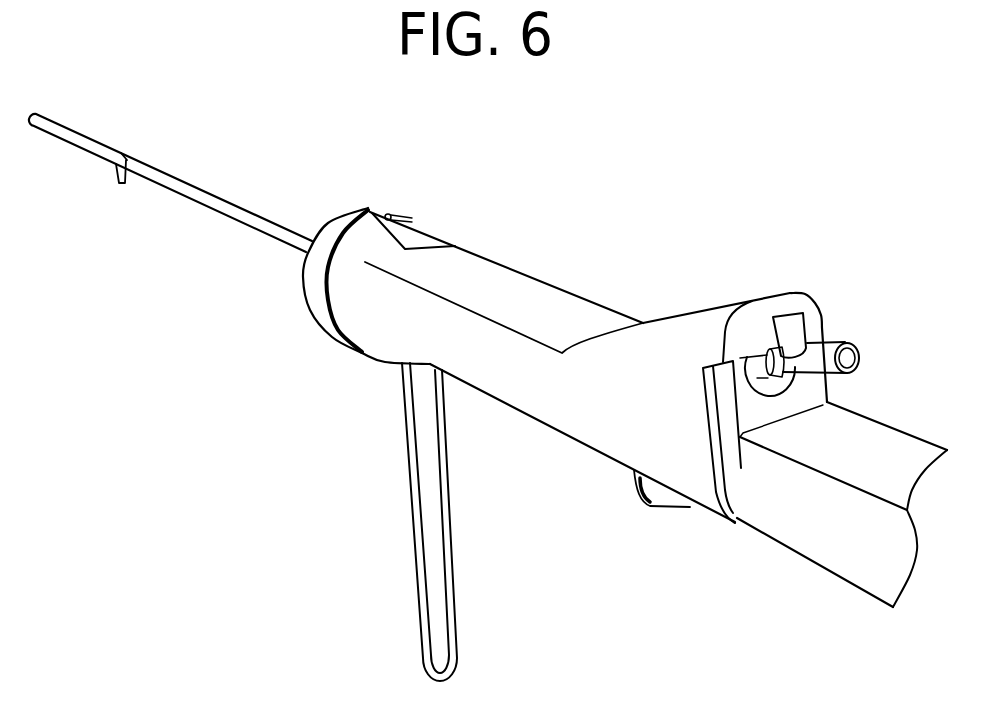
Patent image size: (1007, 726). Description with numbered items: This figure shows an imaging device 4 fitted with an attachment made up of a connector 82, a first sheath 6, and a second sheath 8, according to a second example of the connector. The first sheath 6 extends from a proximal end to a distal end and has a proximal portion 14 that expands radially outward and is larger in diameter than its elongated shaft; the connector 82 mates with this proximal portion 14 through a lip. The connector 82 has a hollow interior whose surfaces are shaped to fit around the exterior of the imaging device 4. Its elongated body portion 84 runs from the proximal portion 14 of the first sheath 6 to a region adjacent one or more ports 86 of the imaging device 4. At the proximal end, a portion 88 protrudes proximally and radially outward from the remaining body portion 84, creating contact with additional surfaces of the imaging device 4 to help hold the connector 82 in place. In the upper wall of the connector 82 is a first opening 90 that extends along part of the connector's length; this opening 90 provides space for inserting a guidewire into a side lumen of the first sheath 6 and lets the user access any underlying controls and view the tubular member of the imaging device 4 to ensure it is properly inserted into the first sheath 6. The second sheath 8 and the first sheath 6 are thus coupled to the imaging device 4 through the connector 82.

The imaging device 4 is at (850, 543).
The first sheath 6 is at (230, 205).
The second sheath 8 is at (82, 134).
The proximal portion 14 is at (317, 288).
The connector 82 is at (535, 306).
The elongated body portion 84 is at (560, 405).
The port 86 is at (823, 350).
The protruding portion 88 is at (690, 332).
The first opening 90 is at (417, 236).